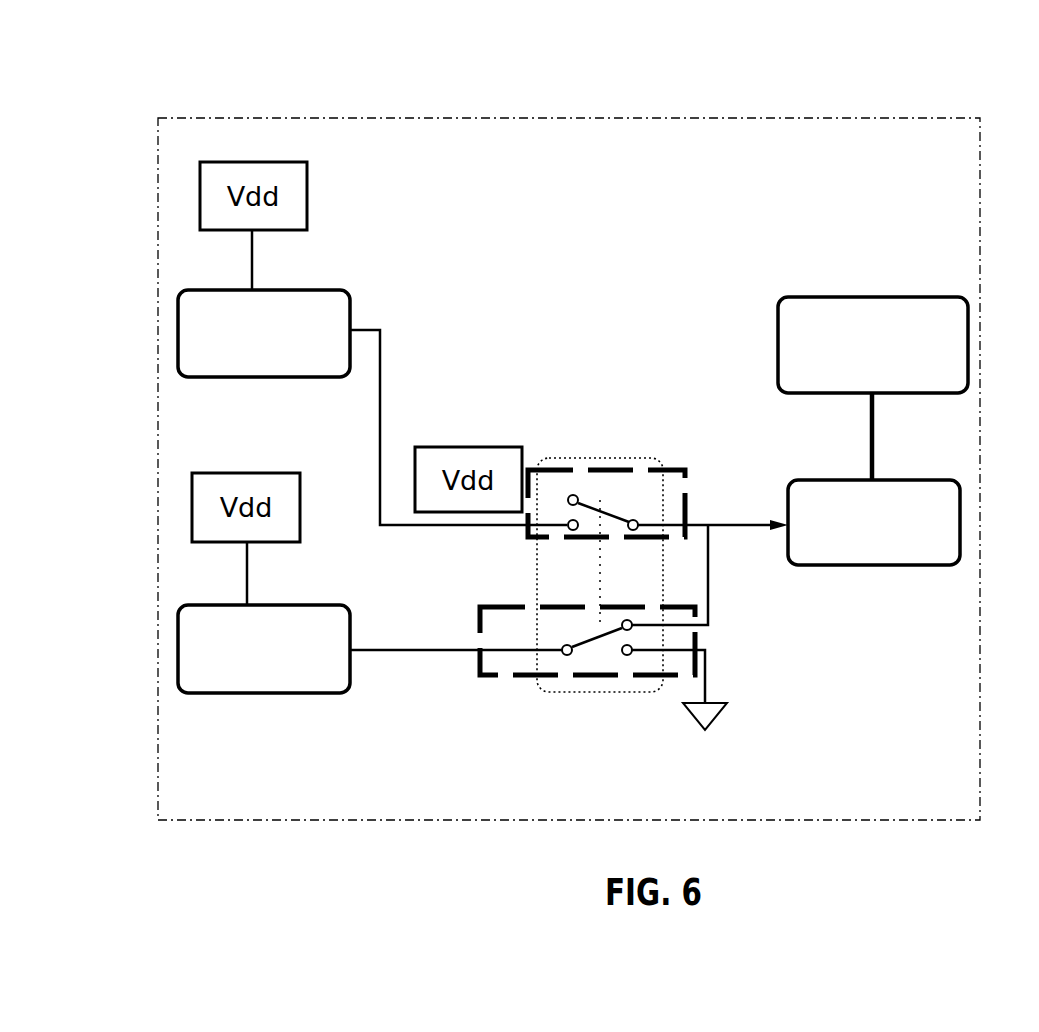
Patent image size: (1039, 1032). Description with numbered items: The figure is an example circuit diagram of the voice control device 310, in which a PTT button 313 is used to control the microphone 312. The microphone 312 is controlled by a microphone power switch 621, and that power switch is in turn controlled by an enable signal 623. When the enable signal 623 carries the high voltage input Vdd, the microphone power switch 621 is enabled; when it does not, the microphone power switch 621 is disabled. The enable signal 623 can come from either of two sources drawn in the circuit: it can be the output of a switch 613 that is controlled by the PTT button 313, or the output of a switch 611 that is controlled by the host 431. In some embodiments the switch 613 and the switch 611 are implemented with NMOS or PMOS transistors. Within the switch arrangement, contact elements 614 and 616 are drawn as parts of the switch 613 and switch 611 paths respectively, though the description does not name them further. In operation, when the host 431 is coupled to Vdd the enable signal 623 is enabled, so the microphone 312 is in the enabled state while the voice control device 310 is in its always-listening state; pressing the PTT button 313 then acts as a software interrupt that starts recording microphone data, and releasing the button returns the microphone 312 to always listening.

The voice control device 310 is at (548, 118).
The microphone 312 is at (835, 297).
The PTT button 313 is at (278, 377).
The host 431 is at (250, 693).
The switch 611 is at (483, 677).
The switch 613 is at (558, 457).
The first switch contact 614 is at (612, 513).
The second switch contact 616 is at (587, 660).
The microphone power switch 621 is at (890, 565).
The enable signal 623 is at (730, 520).